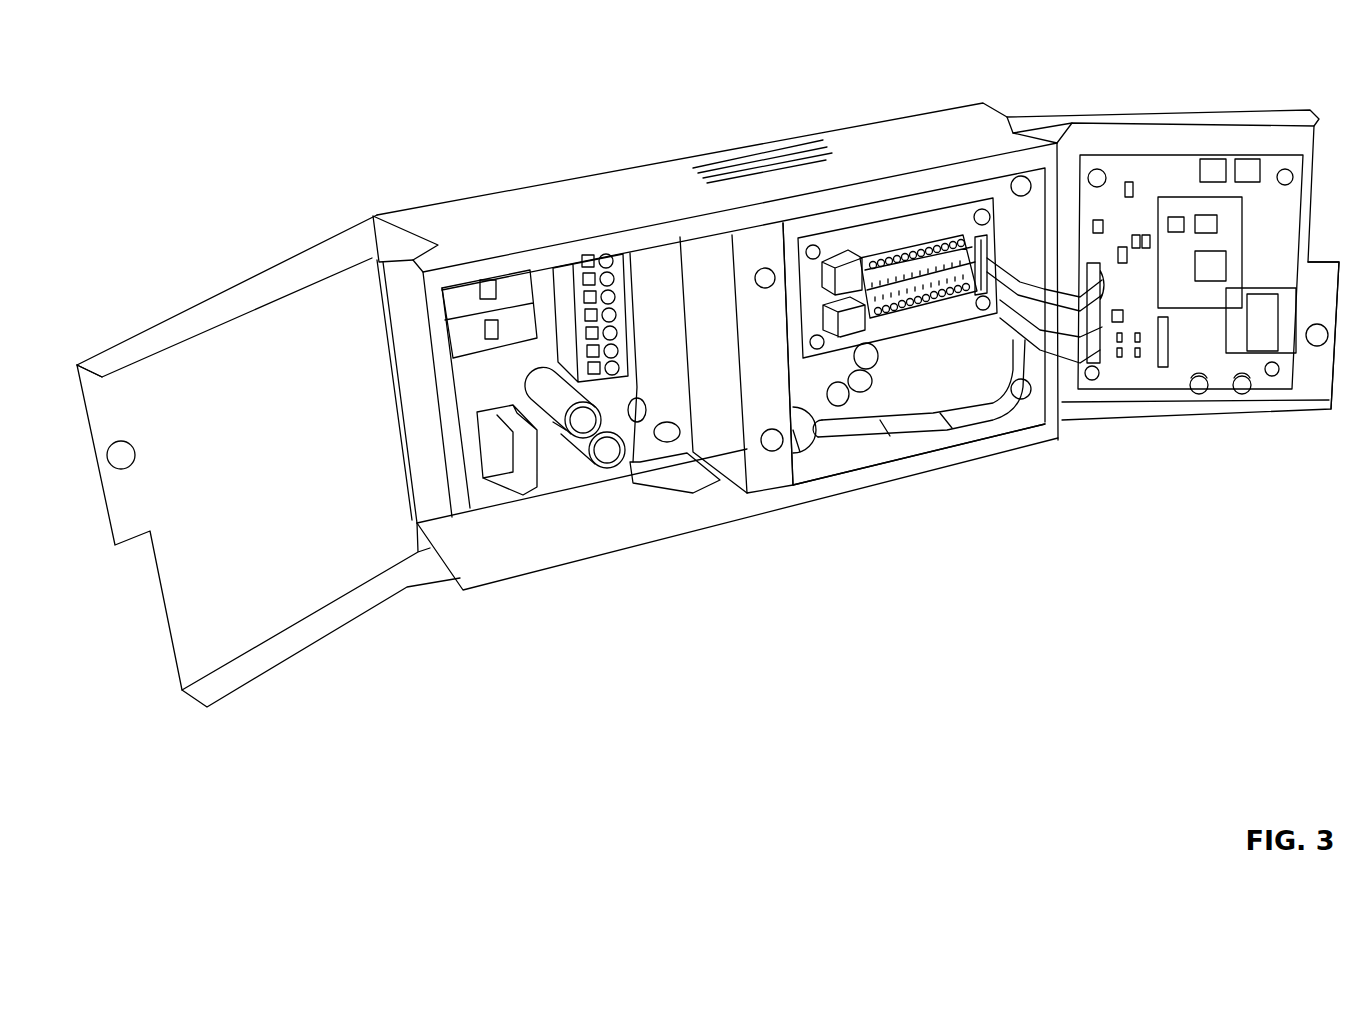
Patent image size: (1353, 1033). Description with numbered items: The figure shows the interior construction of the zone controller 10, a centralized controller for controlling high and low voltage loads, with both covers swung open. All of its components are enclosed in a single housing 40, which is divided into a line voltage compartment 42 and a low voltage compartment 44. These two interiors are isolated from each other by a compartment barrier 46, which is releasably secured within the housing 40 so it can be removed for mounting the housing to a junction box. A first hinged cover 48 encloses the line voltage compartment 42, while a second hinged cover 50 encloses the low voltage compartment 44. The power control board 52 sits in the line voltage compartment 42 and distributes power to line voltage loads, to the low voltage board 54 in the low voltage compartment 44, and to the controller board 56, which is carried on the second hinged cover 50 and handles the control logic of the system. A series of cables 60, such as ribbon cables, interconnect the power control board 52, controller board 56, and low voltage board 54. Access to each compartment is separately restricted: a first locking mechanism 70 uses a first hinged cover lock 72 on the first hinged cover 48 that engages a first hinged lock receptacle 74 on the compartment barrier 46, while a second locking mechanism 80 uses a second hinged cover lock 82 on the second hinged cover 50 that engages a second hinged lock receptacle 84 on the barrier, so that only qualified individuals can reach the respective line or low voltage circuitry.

The zone controller 10 is at (593, 158).
The housing 40 is at (406, 213).
The line voltage compartment 42 is at (619, 578).
The low voltage compartment 44 is at (902, 508).
The compartment barrier 46 is at (773, 468).
The first hinged cover 48 is at (228, 302).
The second hinged cover 50 is at (1292, 110).
The power control board 52 is at (557, 468).
The low voltage board 54 is at (903, 233).
The controller board 56 is at (1272, 217).
The cables 60 is at (1007, 290).
The first locking mechanism 70 is at (127, 327).
The first hinged cover lock 72 is at (121, 469).
The first hinged lock receptacle 74 is at (765, 268).
The second locking mechanism 80 is at (1288, 438).
The second hinged cover lock 82 is at (1317, 346).
The second hinged lock receptacle 84 is at (795, 453).